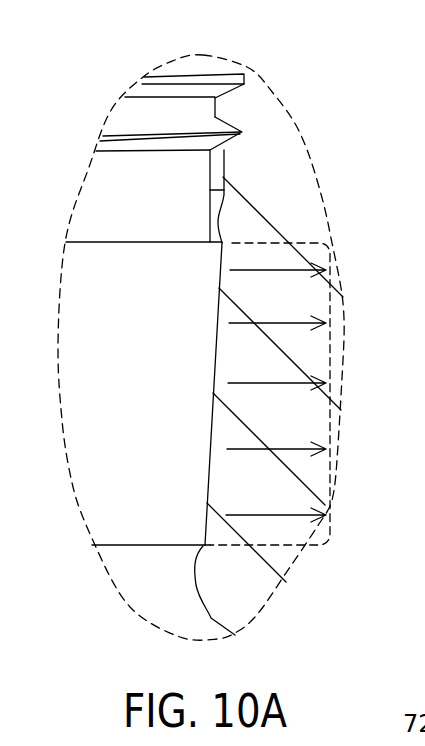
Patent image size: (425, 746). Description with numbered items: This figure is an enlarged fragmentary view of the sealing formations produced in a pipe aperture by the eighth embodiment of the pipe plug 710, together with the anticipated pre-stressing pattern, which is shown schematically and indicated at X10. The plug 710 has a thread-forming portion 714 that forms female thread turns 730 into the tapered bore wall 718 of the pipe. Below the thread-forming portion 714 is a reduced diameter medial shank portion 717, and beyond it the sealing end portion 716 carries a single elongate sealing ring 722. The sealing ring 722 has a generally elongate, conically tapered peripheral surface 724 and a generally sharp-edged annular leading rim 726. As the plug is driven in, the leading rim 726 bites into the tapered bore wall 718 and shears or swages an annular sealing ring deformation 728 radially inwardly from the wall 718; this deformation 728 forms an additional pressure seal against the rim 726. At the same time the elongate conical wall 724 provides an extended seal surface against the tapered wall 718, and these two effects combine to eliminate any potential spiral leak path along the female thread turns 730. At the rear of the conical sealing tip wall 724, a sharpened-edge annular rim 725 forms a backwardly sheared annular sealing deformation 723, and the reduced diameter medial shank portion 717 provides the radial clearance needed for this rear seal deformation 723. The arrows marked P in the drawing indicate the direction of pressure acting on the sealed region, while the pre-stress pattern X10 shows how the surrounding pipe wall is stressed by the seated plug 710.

The pipe plug 710 is at (103, 96).
The thread-forming portion 714 is at (233, 62).
The female thread turns 730 is at (218, 104).
The reduced diameter medial shank portion 717 is at (207, 200).
The backwardly sheared annular sealing deformation 723 is at (233, 220).
The rear sharpened-edge annular rim 725 is at (233, 237).
The tapered bore wall 718 is at (215, 360).
The conically tapered peripheral surface 724 is at (212, 413).
The sealing ring 722 is at (120, 424).
The sealing end portion 716 is at (137, 550).
The annular leading rim 726 is at (202, 543).
The annular sealing ring deformation 728 is at (188, 567).
The pressure direction P is at (257, 483).
The pre-stress pattern X10 is at (333, 549).